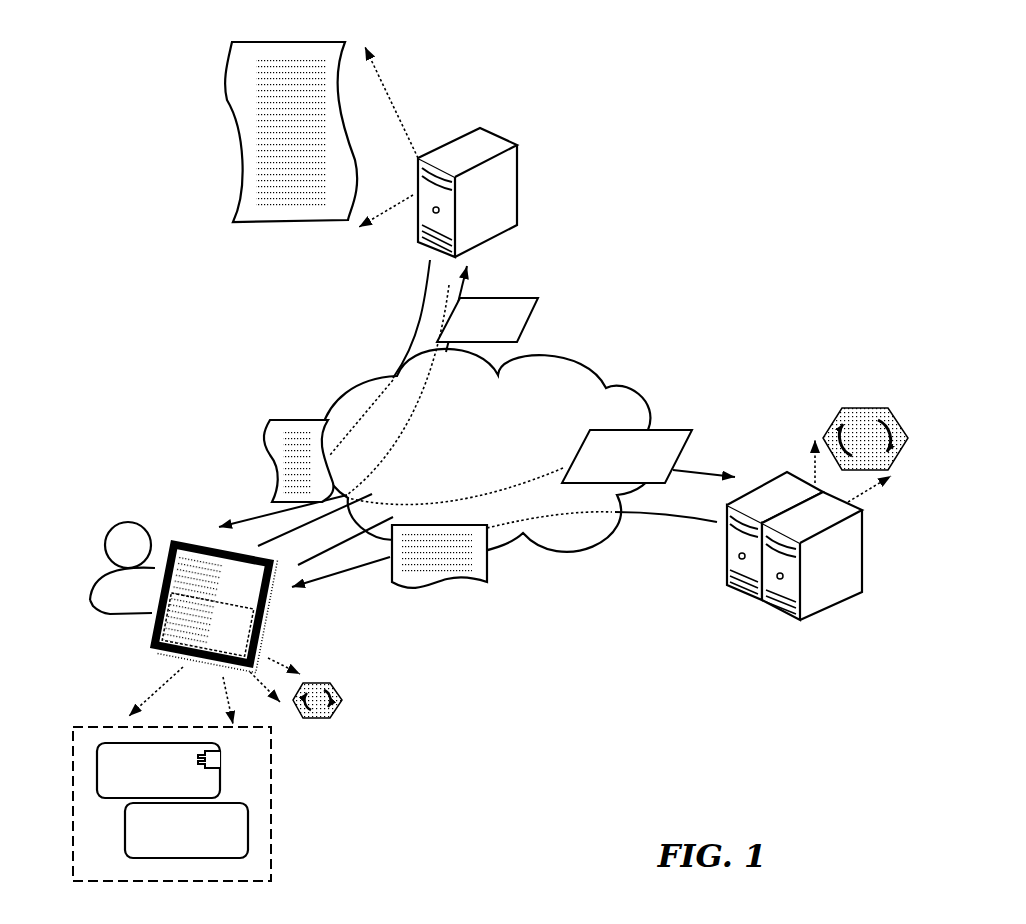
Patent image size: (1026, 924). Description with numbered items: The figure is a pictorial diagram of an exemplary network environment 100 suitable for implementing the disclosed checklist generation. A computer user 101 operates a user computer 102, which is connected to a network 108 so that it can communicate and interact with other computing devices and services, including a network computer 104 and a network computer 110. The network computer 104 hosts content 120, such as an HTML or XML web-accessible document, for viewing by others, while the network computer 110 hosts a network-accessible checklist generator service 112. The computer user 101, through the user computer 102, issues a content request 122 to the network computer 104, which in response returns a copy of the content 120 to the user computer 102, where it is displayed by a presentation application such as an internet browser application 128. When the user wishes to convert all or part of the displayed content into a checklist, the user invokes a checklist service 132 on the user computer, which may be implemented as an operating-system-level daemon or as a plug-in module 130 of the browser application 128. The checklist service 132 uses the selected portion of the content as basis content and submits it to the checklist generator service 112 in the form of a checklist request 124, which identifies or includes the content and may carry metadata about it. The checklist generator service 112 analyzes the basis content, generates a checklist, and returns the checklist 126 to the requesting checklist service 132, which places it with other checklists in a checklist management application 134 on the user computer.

The network environment 100 is at (792, 135).
The computer user 101 is at (123, 522).
The user computer 102 is at (142, 640).
The network computer 104 is at (520, 175).
The network 108 is at (575, 547).
The network computer 110 is at (732, 600).
The checklist generator service 112 is at (853, 397).
The content 120 is at (235, 183).
The content request 122 is at (537, 318).
The checklist request 124 is at (676, 430).
The checklist 126 is at (435, 615).
The browser application 128 is at (97, 770).
The plug-in module 130 is at (217, 760).
The checklist service 132 is at (337, 710).
The checklist management application 134 is at (248, 833).